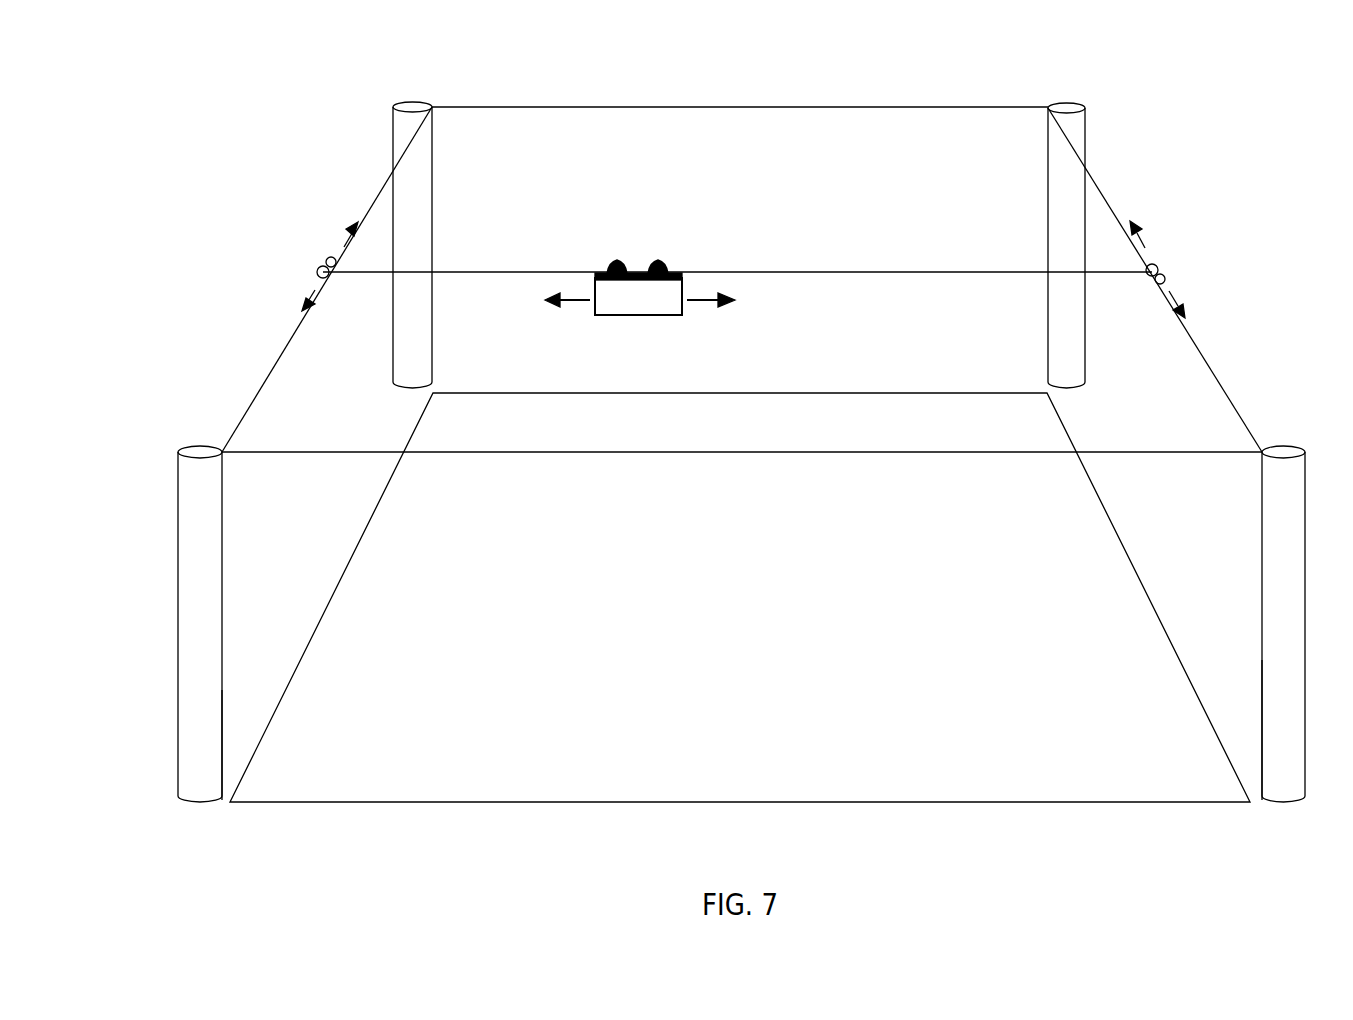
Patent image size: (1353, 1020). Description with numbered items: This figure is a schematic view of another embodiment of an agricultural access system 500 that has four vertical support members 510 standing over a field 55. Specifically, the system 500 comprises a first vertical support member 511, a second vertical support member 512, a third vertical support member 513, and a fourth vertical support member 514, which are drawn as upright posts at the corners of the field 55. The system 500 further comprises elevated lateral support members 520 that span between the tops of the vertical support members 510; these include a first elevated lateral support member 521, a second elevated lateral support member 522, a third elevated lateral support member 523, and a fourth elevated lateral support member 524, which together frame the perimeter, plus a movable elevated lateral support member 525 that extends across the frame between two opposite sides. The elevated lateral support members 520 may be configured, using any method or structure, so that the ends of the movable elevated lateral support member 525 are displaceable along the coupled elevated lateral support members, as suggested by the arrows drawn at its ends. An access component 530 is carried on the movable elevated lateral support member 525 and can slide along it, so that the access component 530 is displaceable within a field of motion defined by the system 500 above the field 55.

The agricultural access system 500 is at (284, 128).
The vertical support members 510 is at (398, 122).
The first vertical support member 511 is at (1086, 152).
The second vertical support member 512 is at (1294, 690).
The third vertical support member 513 is at (198, 716).
The fourth vertical support member 514 is at (400, 146).
The elevated lateral support members 520 is at (737, 280).
The first elevated lateral support member 521 is at (1232, 398).
The second elevated lateral support member 522 is at (1005, 456).
The third elevated lateral support member 523 is at (286, 344).
The fourth elevated lateral support member 524 is at (562, 106).
The movable elevated lateral support member 525 is at (840, 270).
The access component 530 is at (672, 308).
The field 55 is at (1170, 804).